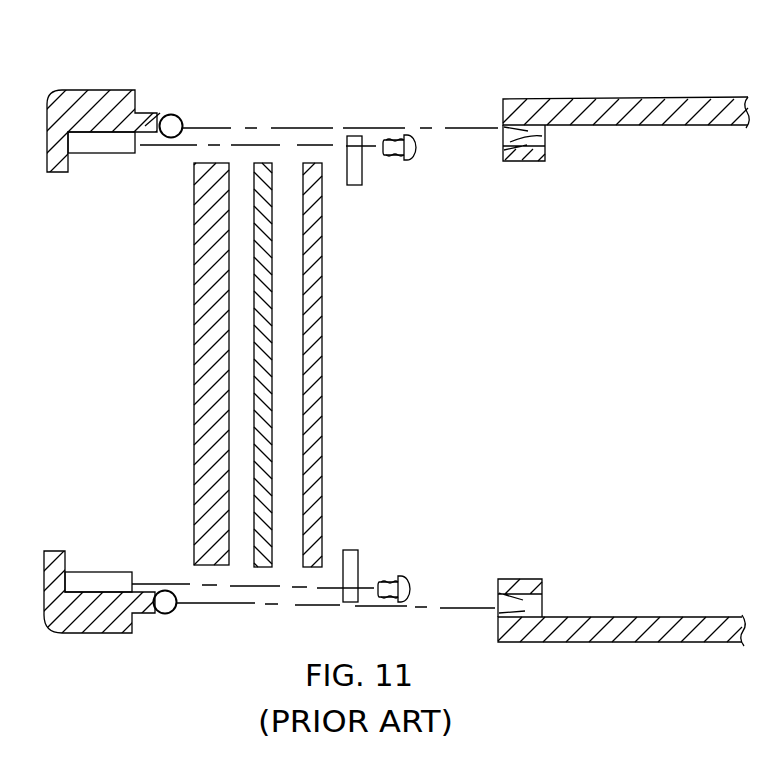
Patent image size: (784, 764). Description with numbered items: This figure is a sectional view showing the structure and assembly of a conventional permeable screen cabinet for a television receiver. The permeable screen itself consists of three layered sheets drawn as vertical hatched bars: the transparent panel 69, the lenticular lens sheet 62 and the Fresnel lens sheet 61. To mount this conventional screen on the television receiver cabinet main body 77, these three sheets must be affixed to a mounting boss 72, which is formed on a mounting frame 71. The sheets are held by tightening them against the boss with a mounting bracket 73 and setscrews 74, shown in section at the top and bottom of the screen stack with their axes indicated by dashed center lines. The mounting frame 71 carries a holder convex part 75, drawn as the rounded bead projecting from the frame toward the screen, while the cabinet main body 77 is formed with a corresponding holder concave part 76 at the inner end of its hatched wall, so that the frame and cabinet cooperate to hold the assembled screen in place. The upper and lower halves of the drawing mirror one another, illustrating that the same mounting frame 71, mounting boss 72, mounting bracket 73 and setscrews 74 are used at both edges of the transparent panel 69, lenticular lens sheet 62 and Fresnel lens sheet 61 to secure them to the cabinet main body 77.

The Fresnel lens sheet 61 is at (322, 280).
The lenticular lens sheet 62 is at (268, 163).
The transparent panel 69 is at (194, 282).
The mounting frame 71 is at (57, 92).
The mounting boss 72 is at (107, 155).
The mounting bracket 73 is at (362, 180).
The setscrew 74 is at (404, 137).
The holder convex part 75 is at (181, 114).
The holder concave part 76 is at (545, 152).
The cabinet main body 77 is at (603, 100).